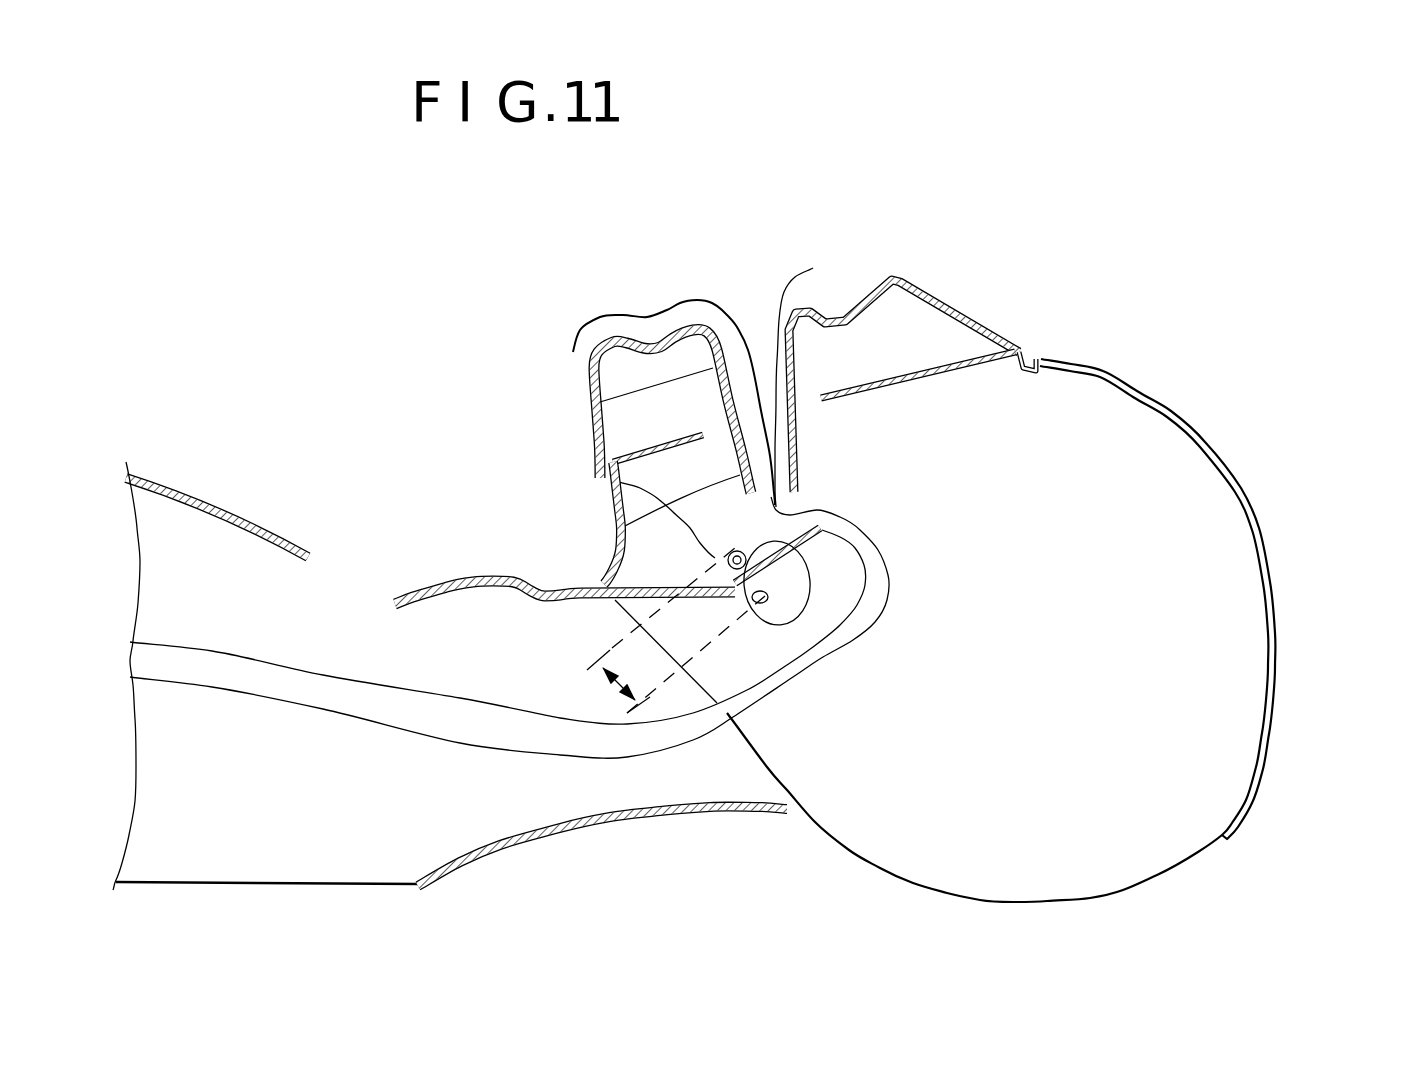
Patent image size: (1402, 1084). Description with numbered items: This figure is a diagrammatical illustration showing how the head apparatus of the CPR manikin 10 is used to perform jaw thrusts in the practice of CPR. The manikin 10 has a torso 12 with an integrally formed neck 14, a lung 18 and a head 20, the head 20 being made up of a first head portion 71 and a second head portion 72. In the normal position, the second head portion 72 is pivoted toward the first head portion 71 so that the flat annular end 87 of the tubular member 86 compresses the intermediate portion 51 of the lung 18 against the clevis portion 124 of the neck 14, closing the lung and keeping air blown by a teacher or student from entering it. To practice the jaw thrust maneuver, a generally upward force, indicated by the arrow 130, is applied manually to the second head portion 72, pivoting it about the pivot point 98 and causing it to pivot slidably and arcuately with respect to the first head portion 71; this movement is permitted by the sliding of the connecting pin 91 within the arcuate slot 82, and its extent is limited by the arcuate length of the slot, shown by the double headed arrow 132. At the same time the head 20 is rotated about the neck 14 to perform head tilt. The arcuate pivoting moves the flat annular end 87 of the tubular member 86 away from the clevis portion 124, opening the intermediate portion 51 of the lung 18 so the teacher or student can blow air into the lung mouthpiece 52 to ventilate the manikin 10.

The CPR manikin 10 is at (496, 375).
The torso 12 is at (207, 494).
The neck 14 is at (415, 590).
The lung 18 is at (346, 725).
The head 20 is at (1253, 484).
The intermediate portion 51 is at (606, 735).
The lung mouthpiece 52 is at (628, 318).
The first head portion 71 is at (1277, 701).
The second head portion 72 is at (957, 302).
The arcuate slot 82 is at (850, 398).
The tubular member 86 is at (588, 403).
The flat annular end 87 is at (614, 527).
The connecting pin 91 is at (803, 549).
The pivot point 98 is at (1043, 349).
The clevis portion 124 is at (886, 541).
The arrow 130 is at (592, 443).
The double headed arrow 132 is at (620, 700).